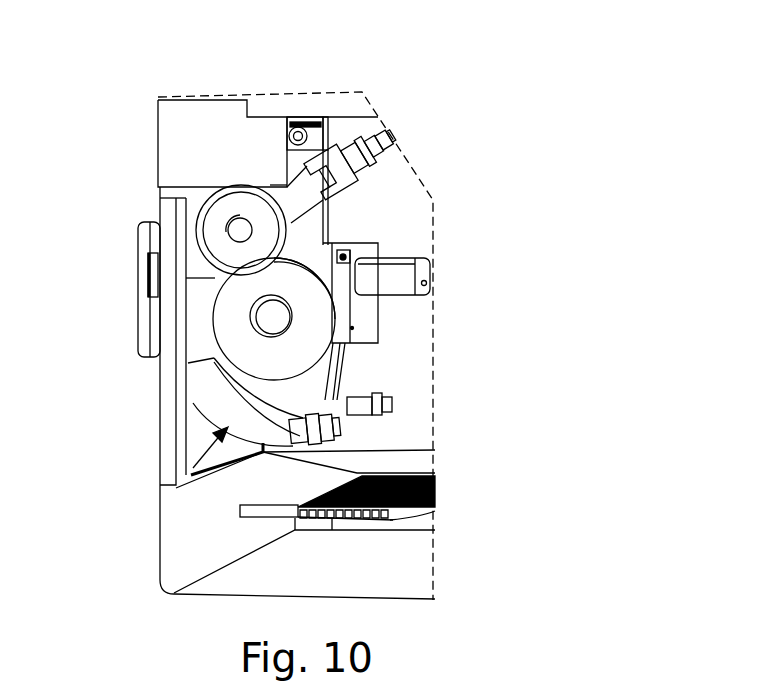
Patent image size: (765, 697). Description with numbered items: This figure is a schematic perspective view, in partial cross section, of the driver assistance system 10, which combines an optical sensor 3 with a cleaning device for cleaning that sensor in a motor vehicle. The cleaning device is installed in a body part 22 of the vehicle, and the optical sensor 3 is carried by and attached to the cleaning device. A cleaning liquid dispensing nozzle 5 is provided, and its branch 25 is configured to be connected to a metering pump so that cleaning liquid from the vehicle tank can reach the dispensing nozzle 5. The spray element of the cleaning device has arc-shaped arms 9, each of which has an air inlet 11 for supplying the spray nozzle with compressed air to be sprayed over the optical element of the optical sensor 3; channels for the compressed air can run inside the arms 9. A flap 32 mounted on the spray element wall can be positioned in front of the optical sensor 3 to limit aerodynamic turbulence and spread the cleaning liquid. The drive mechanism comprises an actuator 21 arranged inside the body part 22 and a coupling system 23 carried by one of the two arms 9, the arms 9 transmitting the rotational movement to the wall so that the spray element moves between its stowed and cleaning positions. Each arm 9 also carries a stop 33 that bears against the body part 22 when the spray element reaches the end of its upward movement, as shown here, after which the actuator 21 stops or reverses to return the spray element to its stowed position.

The driver assistance system 10 is at (346, 74).
The body part 22 is at (173, 140).
The flap 32 is at (150, 322).
The dispensing nozzle 5 is at (310, 185).
The branch 25 is at (393, 133).
The actuator 21 is at (228, 224).
The coupling system 23 is at (240, 338).
The stop 33 is at (202, 427).
The optical sensor 3 is at (402, 268).
The air inlet 11 is at (393, 403).
The arm 9 is at (308, 392).